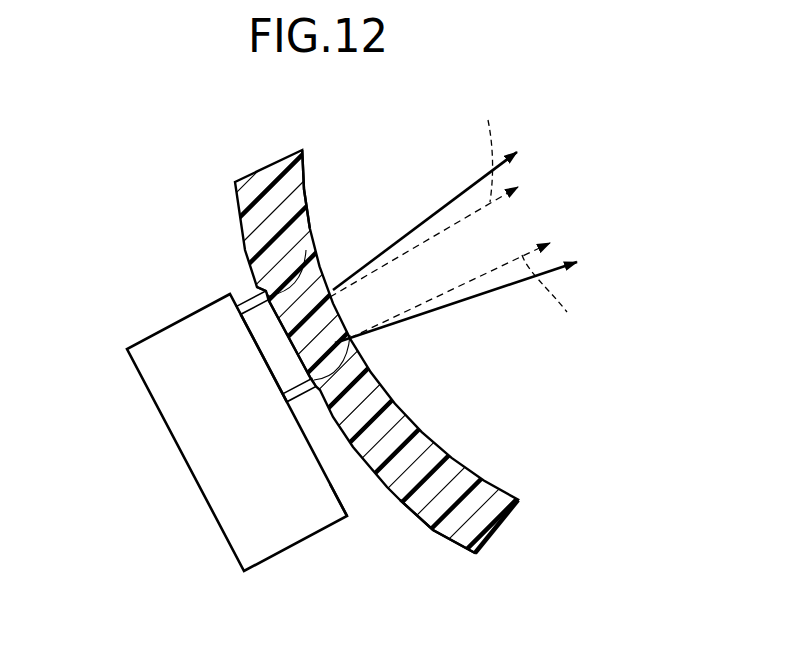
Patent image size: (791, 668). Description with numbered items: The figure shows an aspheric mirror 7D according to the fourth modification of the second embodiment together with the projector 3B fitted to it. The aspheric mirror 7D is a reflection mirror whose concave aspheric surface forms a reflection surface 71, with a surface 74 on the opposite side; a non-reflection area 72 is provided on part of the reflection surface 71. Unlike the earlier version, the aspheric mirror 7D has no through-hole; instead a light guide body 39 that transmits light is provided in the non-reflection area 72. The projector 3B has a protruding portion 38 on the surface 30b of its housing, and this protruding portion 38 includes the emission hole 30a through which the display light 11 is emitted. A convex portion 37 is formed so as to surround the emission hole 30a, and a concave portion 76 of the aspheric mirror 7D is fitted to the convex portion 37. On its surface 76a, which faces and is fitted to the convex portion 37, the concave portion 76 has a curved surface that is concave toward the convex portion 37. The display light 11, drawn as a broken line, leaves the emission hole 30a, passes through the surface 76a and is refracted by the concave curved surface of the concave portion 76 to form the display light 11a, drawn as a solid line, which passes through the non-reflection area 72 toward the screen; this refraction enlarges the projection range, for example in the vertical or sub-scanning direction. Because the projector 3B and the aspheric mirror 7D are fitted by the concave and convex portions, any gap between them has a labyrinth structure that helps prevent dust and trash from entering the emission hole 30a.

The aspheric mirror 7D is at (234, 220).
The reflection surface 71 is at (308, 206).
The convex portion 37 is at (290, 287).
The protruding portion 38 is at (238, 292).
The projector 3B is at (274, 558).
The concave portion 76 is at (240, 311).
The surface 76a is at (303, 342).
The emission hole 30a is at (312, 341).
The surface 30b is at (342, 505).
The surface 74 is at (440, 539).
The non-reflection area 72 is at (350, 340).
The light guide body 39 is at (350, 300).
The display light 11a is at (427, 216).
The display light 11 is at (532, 224).